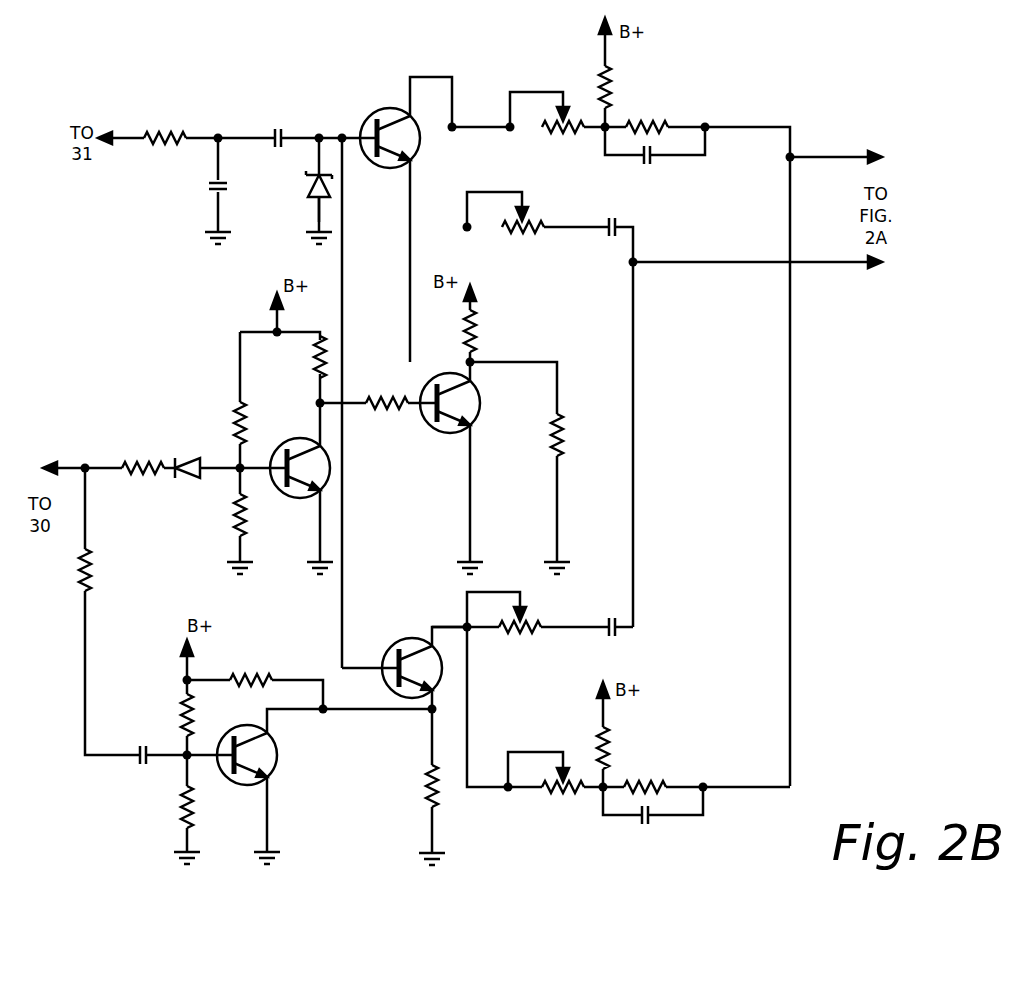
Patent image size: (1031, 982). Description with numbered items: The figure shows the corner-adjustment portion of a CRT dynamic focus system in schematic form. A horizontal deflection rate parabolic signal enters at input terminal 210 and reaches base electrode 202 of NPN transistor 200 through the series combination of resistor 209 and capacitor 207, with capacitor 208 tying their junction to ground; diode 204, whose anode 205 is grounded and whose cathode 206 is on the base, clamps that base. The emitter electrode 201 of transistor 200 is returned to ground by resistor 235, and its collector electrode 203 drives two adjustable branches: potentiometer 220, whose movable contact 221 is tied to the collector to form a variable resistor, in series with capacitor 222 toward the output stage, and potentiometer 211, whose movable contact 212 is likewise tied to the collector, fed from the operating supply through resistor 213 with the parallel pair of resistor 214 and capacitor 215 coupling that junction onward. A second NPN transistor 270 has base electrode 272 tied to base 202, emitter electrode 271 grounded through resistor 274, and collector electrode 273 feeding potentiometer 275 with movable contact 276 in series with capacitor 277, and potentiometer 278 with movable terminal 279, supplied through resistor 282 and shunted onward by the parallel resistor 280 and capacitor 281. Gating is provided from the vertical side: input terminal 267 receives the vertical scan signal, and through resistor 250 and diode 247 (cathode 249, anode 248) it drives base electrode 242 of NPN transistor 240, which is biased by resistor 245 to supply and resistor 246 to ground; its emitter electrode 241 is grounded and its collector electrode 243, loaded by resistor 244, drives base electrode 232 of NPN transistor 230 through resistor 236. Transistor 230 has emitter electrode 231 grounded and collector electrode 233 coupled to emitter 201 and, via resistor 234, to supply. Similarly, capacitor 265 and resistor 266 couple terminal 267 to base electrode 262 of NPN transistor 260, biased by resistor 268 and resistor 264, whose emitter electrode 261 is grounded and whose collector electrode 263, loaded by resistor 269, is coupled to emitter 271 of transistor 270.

The NPN transistor 200 is at (384, 110).
The emitter electrode 201 is at (408, 178).
The base electrode 202 is at (360, 132).
The collector electrode 203 is at (420, 108).
The diode 204 is at (310, 194).
The anode 205 is at (312, 202).
The cathode 206 is at (310, 175).
The capacitor 207 is at (282, 132).
The capacitor 208 is at (209, 186).
The resistor 209 is at (166, 132).
The input terminal 210 is at (112, 136).
The potentiometer 211 is at (573, 134).
The movable contact 212 is at (586, 98).
The resistor 213 is at (614, 72).
The resistor 214 is at (650, 120).
The capacitor 215 is at (650, 166).
The potentiometer 220 is at (530, 232).
The movable contact 221 is at (528, 219).
The capacitor 222 is at (610, 238).
The NPN transistor 230 is at (480, 403).
The emitter electrode 231 is at (472, 440).
The base electrode 232 is at (424, 416).
The collector electrode 233 is at (472, 375).
The resistor 234 is at (476, 331).
The resistor 235 is at (563, 444).
The resistor 236 is at (368, 400).
The NPN transistor 240 is at (310, 442).
The emitter electrode 241 is at (316, 502).
The base electrode 242 is at (266, 462).
The collector electrode 243 is at (330, 425).
The resistor 244 is at (314, 362).
The resistor 245 is at (234, 413).
The resistor 246 is at (230, 530).
The diode 247 is at (188, 484).
The anode 248 is at (208, 463).
The cathode 249 is at (174, 460).
The resistor 250 is at (122, 460).
The NPN transistor 260 is at (258, 736).
The emitter electrode 261 is at (269, 797).
The base electrode 262 is at (214, 768).
The collector electrode 263 is at (269, 737).
The resistor 264 is at (178, 818).
The capacitor 265 is at (140, 773).
The resistor 266 is at (88, 569).
The input terminal 267 is at (48, 460).
The resistor 268 is at (178, 715).
The resistor 269 is at (246, 671).
The NPN transistor 270 is at (418, 638).
The emitter electrode 271 is at (428, 704).
The base electrode 272 is at (362, 660).
The collector electrode 273 is at (432, 624).
The resistor 274 is at (424, 792).
The potentiometer 275 is at (522, 638).
The movable contact 276 is at (528, 615).
The capacitor 277 is at (608, 618).
The potentiometer 278 is at (566, 804).
The movable terminal 279 is at (580, 764).
The resistor 280 is at (650, 776).
The capacitor 281 is at (646, 834).
The resistor 282 is at (612, 728).